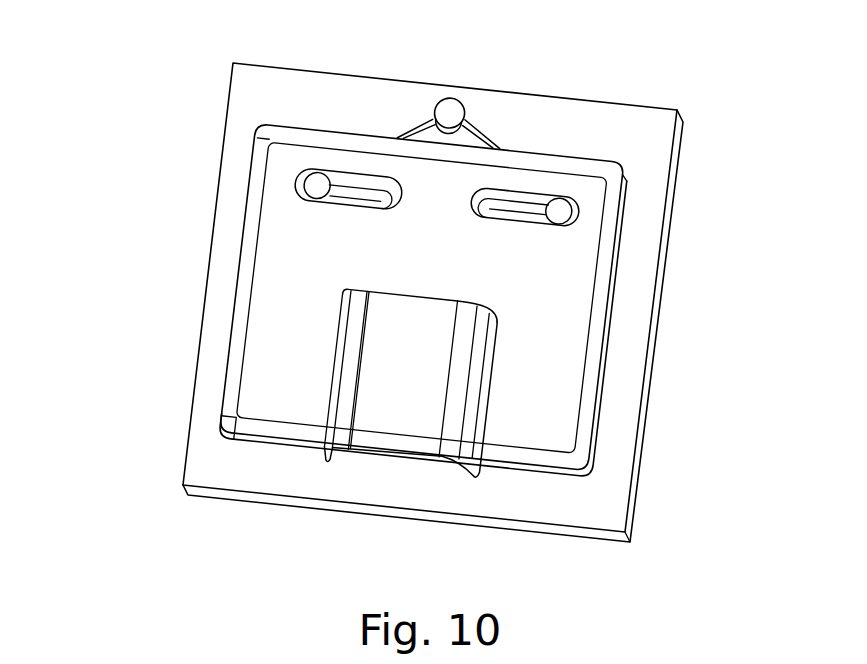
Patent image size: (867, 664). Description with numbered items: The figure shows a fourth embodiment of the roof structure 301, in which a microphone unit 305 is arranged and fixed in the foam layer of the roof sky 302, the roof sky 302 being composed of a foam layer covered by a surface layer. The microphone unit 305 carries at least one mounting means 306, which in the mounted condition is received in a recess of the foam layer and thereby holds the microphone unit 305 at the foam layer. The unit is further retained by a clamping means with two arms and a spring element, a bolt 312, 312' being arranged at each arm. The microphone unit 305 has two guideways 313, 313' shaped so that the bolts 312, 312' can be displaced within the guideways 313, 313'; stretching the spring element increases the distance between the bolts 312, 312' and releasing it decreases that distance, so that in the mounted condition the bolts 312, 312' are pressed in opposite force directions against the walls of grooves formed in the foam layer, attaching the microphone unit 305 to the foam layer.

The roof structure 301 is at (398, 318).
The roof sky 302 is at (305, 528).
The microphone unit 305 is at (550, 372).
The mounting means 306 is at (451, 113).
The bolt 312 is at (653, 254).
The bolt 312' is at (225, 182).
The guideway 313 is at (563, 126).
The guideway 313' is at (258, 225).